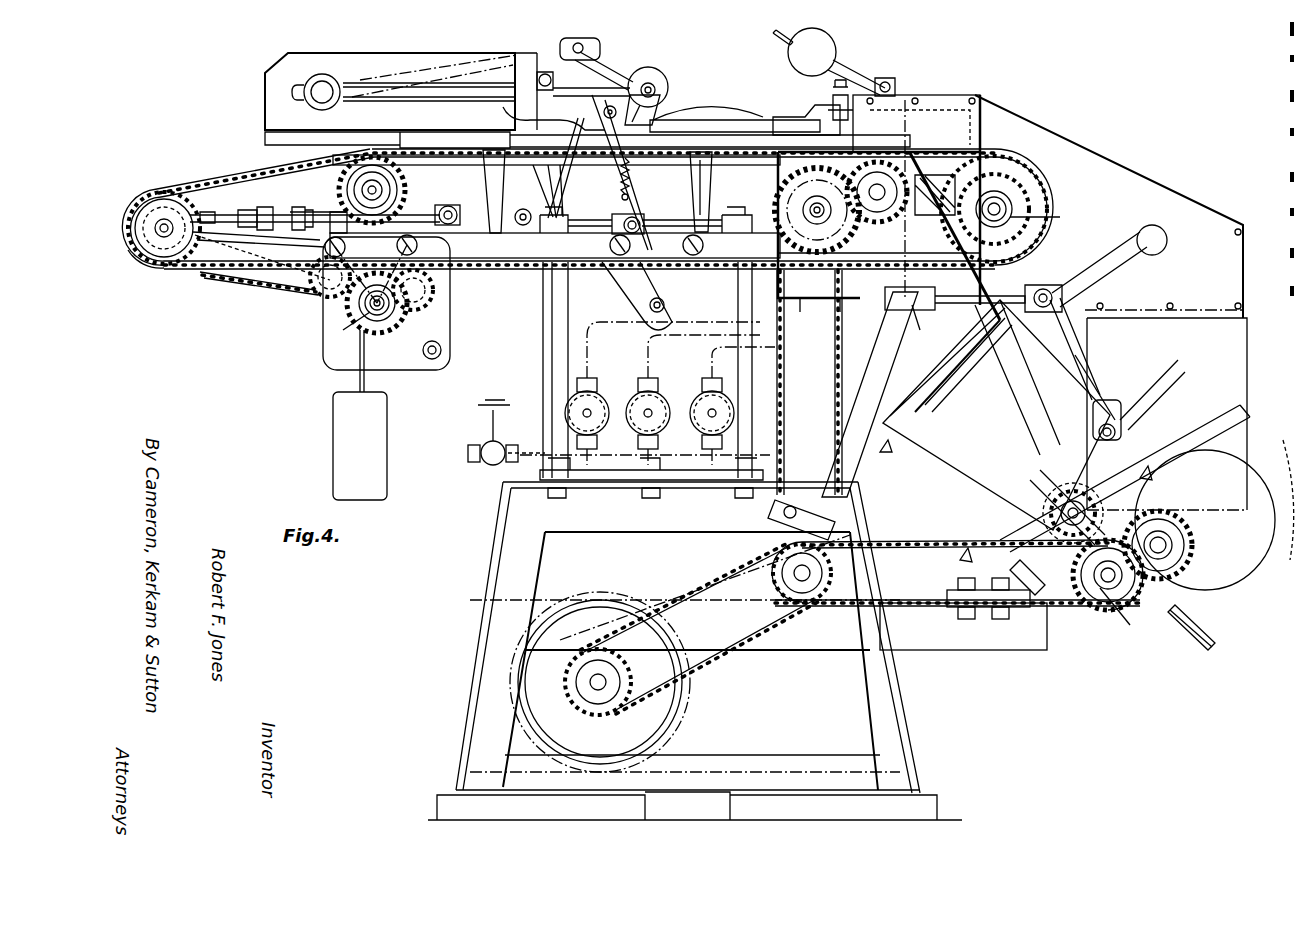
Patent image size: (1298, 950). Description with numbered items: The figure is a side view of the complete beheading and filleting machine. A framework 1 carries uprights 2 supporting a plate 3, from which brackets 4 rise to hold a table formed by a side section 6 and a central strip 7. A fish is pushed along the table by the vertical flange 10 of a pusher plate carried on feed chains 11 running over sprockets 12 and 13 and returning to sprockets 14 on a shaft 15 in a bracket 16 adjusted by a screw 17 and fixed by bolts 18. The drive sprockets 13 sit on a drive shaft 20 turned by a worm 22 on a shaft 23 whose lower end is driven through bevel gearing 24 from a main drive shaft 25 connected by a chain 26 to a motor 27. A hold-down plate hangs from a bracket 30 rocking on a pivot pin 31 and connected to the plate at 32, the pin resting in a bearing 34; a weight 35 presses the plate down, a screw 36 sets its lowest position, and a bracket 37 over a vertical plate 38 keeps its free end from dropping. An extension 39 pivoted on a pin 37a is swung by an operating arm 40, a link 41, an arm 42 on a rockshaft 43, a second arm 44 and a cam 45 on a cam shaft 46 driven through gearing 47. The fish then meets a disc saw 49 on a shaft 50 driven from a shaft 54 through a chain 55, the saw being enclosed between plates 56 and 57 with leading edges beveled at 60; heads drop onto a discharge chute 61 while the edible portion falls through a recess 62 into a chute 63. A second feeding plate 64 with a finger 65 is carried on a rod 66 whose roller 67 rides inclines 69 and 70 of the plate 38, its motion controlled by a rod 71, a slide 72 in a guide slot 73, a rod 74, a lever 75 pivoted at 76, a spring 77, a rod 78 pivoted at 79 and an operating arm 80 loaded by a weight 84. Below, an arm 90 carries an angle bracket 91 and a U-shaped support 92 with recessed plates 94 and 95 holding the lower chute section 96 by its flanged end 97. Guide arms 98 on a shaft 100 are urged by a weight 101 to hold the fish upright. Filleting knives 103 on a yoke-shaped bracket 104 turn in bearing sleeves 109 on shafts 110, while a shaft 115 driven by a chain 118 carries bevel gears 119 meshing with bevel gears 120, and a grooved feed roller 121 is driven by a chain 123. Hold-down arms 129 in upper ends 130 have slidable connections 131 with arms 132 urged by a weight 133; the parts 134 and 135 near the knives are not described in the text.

The framework 1 is at (505, 577).
The uprights 2 is at (545, 343).
The plate 3 is at (508, 262).
The brackets 4 is at (488, 185).
The side section 6 is at (438, 165).
The central section 7 is at (990, 135).
The vertical flange 10 is at (432, 138).
The feed chains 11 is at (205, 200).
The sprockets 12 is at (345, 175).
The drive sprockets 13 is at (1035, 207).
The sprockets 14 is at (142, 258).
The shaft 15 is at (160, 228).
The bracket 16 is at (215, 210).
The screw 17 is at (282, 210).
The bolts 18 is at (222, 215).
The drive shaft 20 is at (1037, 216).
The worm 22 is at (935, 120).
The shaft 23 is at (885, 328).
The bevel gearing 24 is at (775, 547).
The main drive shaft 25 is at (805, 603).
The chain 26 is at (718, 655).
The driving motor 27 is at (660, 718).
The bracket 30 is at (855, 70).
The pivot pin 31 is at (878, 80).
The pivotal connection 32 is at (833, 100).
The bearing 34 is at (888, 82).
The weight 35 is at (788, 52).
The screw 36 is at (842, 78).
The bracket 37 is at (630, 100).
The pivot pin 37a is at (604, 113).
The vertical plate 38 is at (295, 60).
The extension 39 is at (552, 160).
The operating arm 40 is at (595, 65).
The link 41 is at (533, 202).
The arm 42 is at (452, 242).
The rockshaft 43 is at (448, 205).
The second arm 44 is at (420, 272).
The cam 45 is at (325, 298).
The cam shaft 46 is at (320, 278).
The gearing 47 is at (300, 298).
The disc saw 49 is at (840, 185).
The shaft 50 is at (880, 190).
The shaft 54 is at (805, 208).
The chain 55 is at (784, 410).
The plate 56 is at (1030, 140).
The plate 57 is at (965, 118).
The beveled edges 60 is at (915, 88).
The discharge chute 61 is at (430, 360).
The recess 62 is at (433, 290).
The filleting chute 63 is at (343, 332).
The plate 64 is at (740, 115).
The finger 65 is at (632, 168).
The rod 66 is at (660, 75).
The roller 67 is at (652, 83).
The incline 69 is at (655, 95).
The incline 70 is at (800, 110).
The rod 71 is at (590, 88).
The slide 72 is at (305, 94).
The guide slot 73 is at (296, 88).
The rod 74 is at (548, 70).
The lever 75 is at (585, 42).
The pivot 76 is at (668, 303).
The spring 77 is at (635, 190).
The rod 78 is at (578, 226).
The pivot 79 is at (640, 224).
The operating arm 80 is at (425, 302).
The weight 84 is at (340, 446).
The arm 90 is at (935, 650).
The angle bracket 91 is at (1025, 607).
The U-shaped support 92 is at (930, 392).
The recessed plate 94 is at (950, 335).
The recessed plate 95 is at (1045, 480).
The lower section 96 is at (990, 385).
The flanged end 97 is at (955, 318).
The guide arms 98 is at (1048, 358).
The shaft 100 is at (1058, 285).
The weight 101 is at (1171, 247).
The disk blades 103 is at (1235, 565).
The yoke-shaped bracket 104 is at (1205, 420).
The bearing sleeves 109 is at (1165, 550).
The shaft 110 is at (1125, 585).
The shaft 115 is at (1107, 590).
The chain 118 is at (935, 606).
The bevel gears 119 is at (1118, 595).
The bevel gears 120 is at (1180, 560).
The feed roller 121 is at (1030, 520).
The chain 123 is at (1044, 571).
The arms 129 is at (1130, 445).
The upper ends 130 is at (1120, 425).
The slidable connections 131 is at (1085, 395).
The arms 132 is at (1065, 360).
The weight 133 is at (888, 305).
The bracket 134 is at (1200, 645).
The bracket 135 is at (1190, 625).